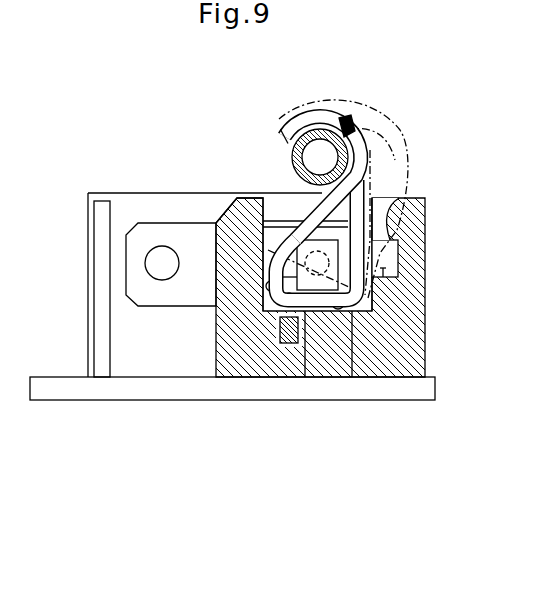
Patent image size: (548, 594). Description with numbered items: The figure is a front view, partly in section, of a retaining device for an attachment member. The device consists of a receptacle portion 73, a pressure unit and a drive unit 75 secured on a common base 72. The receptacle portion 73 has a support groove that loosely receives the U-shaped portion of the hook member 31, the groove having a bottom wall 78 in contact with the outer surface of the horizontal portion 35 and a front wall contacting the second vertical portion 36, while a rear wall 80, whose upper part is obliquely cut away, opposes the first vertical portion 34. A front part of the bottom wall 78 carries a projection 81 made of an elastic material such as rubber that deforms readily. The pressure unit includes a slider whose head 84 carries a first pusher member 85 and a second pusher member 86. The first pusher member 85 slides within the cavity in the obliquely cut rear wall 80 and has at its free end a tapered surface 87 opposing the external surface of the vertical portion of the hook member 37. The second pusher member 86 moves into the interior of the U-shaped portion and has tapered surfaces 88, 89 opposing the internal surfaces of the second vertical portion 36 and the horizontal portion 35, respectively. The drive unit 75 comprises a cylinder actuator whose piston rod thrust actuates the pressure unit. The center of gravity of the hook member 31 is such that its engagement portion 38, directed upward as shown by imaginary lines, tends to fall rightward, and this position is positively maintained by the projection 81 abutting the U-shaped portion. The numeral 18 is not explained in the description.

The pin 18 is at (293, 160).
The hook member 31 is at (372, 159).
The first vertical portion 34 is at (375, 222).
The horizontal portion 35 is at (305, 378).
The second vertical portion 36 is at (265, 267).
The hook member 37 is at (366, 112).
The engagement portion 38 is at (292, 144).
The base 72 is at (247, 400).
The receptacle portion 73 is at (427, 343).
The drive unit 75 is at (117, 192).
The bottom wall 78 is at (268, 290).
The rear wall 80 is at (392, 203).
The projection 81 is at (282, 325).
The head 84 is at (163, 227).
The first pusher member 85 is at (393, 258).
The second pusher member 86 is at (312, 243).
The tapered surface 87 is at (368, 293).
The tapered surface 88 is at (222, 221).
The tapered surface 89 is at (413, 312).